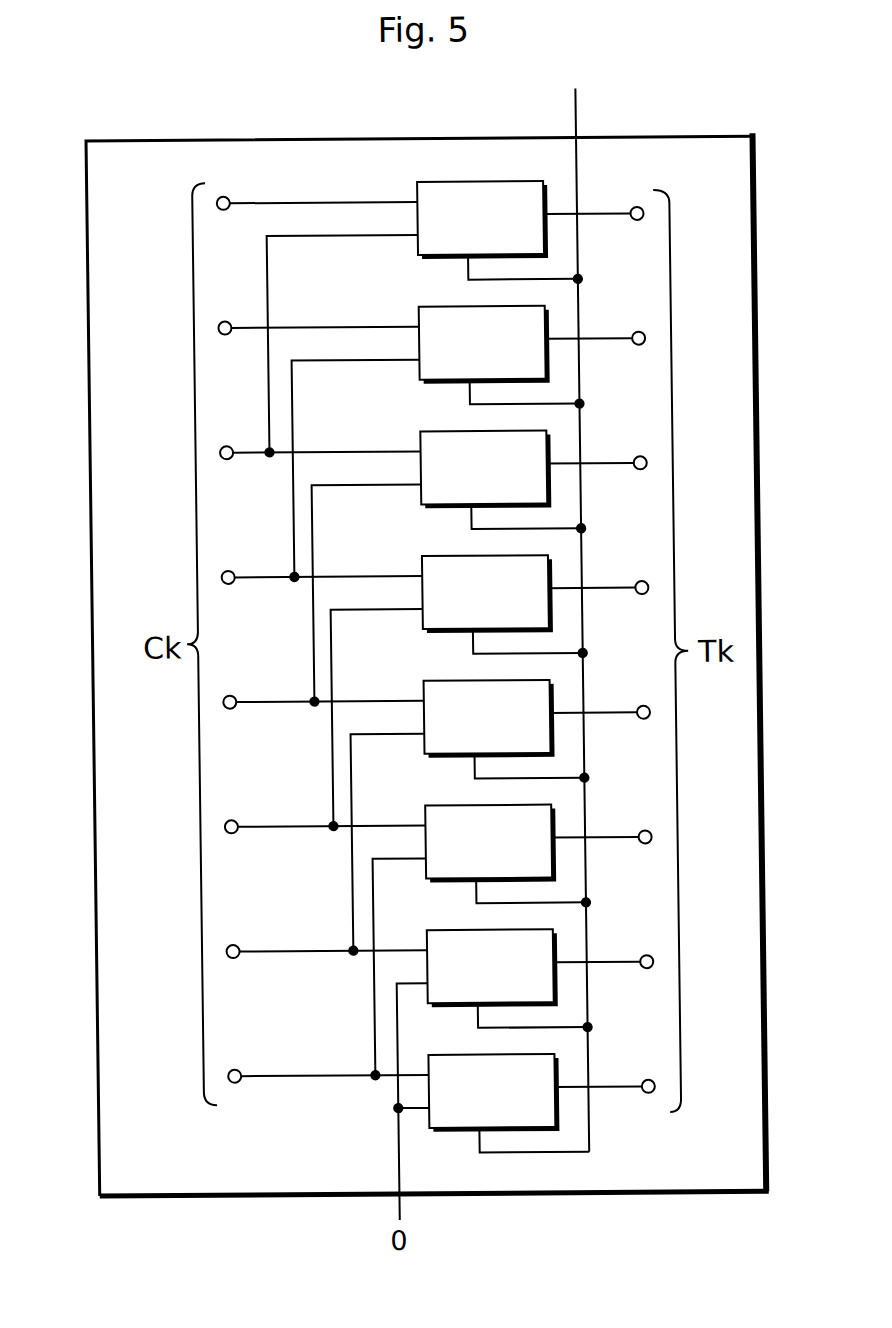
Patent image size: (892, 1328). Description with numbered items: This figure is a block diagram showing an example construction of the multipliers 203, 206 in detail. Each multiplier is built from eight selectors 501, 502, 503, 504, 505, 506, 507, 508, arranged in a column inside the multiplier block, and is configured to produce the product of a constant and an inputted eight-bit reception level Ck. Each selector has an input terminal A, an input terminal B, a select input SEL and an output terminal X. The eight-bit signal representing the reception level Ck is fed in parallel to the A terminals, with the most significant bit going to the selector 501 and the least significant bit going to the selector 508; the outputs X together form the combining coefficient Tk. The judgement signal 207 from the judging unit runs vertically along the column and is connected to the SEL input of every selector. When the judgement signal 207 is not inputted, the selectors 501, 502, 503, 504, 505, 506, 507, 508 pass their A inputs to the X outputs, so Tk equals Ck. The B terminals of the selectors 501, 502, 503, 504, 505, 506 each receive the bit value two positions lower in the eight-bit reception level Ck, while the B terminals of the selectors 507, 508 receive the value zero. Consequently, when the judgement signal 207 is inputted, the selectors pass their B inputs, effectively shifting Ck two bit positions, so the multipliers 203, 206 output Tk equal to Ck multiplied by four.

The multiplier 203 is at (427, 647).
The multiplier 206 is at (270, 141).
The judgement signal 207 is at (576, 110).
The selector 501 is at (416, 184).
The selector 502 is at (416, 309).
The selector 503 is at (416, 434).
The selector 504 is at (416, 558).
The selector 505 is at (416, 683).
The selector 506 is at (416, 808).
The selector 507 is at (416, 932).
The selector 508 is at (416, 1057).